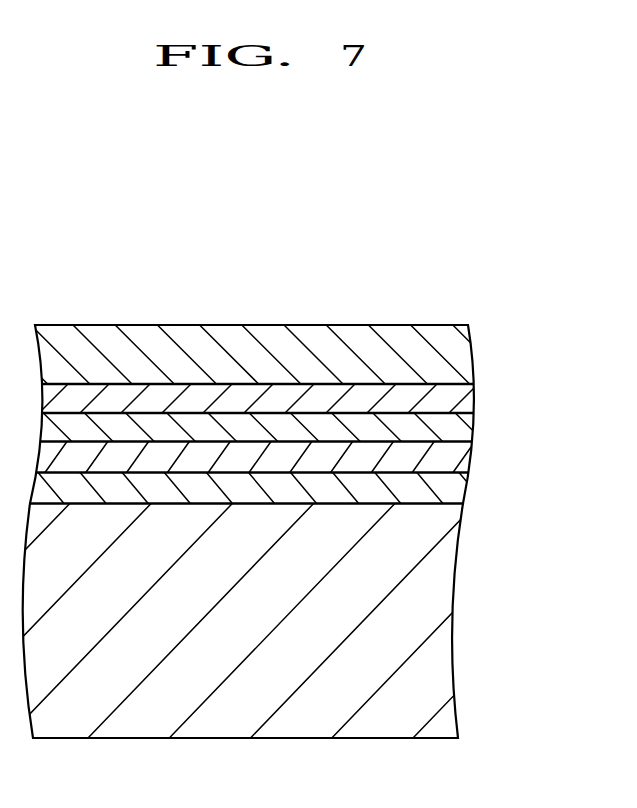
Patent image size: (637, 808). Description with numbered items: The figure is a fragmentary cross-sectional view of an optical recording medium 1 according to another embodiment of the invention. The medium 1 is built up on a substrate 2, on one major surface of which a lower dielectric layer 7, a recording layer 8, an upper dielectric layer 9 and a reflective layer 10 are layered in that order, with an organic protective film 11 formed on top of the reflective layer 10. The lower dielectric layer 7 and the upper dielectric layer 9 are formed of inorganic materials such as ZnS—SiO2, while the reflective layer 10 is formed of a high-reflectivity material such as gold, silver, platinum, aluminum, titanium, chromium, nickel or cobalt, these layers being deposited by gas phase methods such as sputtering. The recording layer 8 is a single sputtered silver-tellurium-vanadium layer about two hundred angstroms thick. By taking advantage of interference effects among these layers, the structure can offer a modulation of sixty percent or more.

The magnetic recording medium 1 is at (397, 270).
The substrate 2 is at (435, 616).
The lower dielectric layer 7 is at (448, 490).
The recording layer 8 is at (456, 455).
The upper dielectric layer 9 is at (457, 429).
The reflective layer 10 is at (458, 401).
The organic protective film 11 is at (457, 351).